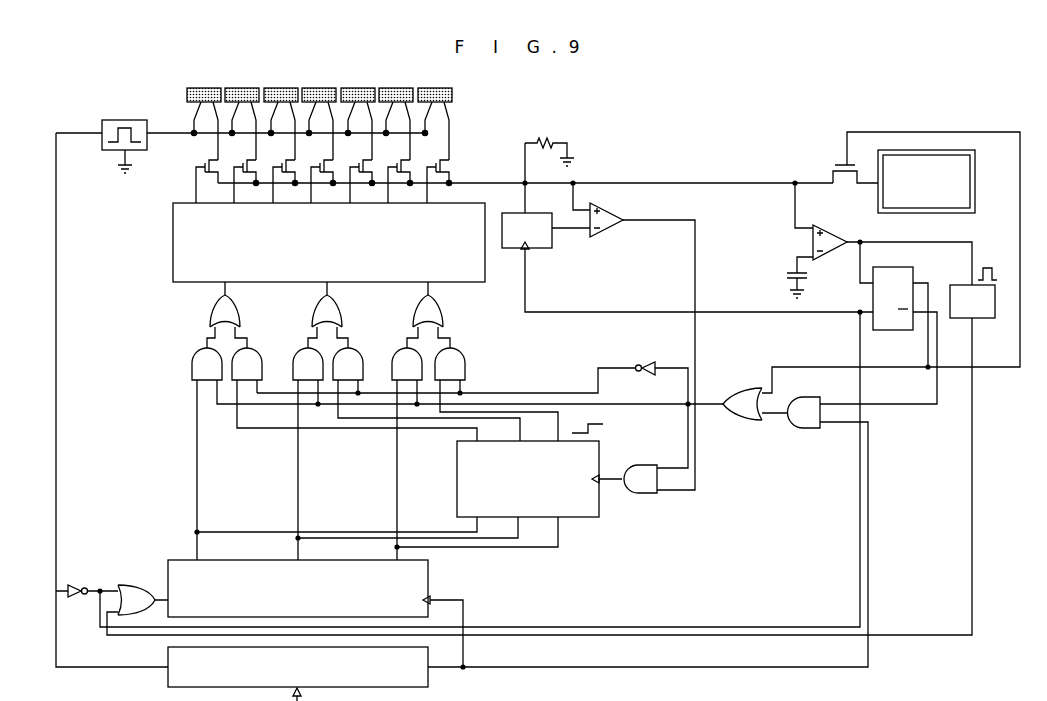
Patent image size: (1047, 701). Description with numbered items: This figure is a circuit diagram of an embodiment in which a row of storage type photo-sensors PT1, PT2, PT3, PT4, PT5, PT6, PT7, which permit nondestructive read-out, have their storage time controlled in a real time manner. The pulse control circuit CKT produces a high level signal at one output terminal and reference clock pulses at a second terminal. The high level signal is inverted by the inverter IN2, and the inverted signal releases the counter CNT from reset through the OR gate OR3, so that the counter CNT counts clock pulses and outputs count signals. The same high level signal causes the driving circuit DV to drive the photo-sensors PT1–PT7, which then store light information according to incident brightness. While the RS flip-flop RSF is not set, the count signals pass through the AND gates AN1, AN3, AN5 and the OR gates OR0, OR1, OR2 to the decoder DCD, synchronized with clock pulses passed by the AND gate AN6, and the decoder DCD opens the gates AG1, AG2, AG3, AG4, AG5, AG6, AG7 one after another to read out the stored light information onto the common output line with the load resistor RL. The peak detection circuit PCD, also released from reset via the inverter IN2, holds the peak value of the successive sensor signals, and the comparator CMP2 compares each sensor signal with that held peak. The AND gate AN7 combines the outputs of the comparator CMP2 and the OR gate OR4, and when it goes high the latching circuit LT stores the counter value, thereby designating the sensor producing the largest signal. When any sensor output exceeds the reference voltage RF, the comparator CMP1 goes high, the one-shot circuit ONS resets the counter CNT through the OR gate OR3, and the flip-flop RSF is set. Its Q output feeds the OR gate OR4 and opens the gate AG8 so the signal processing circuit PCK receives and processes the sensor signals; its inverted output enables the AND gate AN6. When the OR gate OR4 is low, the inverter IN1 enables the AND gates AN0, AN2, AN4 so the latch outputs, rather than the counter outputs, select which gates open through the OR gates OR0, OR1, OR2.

The driving circuit DV is at (120, 119).
The photo-sensor PT1 is at (419, 87).
The photo-sensor PT2 is at (380, 87).
The photo-sensor PT3 is at (342, 87).
The photo-sensor PT4 is at (303, 87).
The photo-sensor PT5 is at (265, 87).
The photo-sensor PT6 is at (226, 87).
The photo-sensor PT7 is at (188, 87).
The gate AG1 is at (440, 159).
The gate AG2 is at (401, 159).
The gate AG3 is at (363, 159).
The gate AG4 is at (324, 159).
The gate AG5 is at (286, 159).
The gate AG6 is at (247, 159).
The gate AG7 is at (209, 159).
The gate AG8 is at (833, 164).
The decoder DCD is at (329, 242).
The load resistor RL is at (538, 141).
The peak detection circuit PCD is at (527, 231).
The comparator CMP1 is at (832, 226).
The comparator CMP2 is at (622, 219).
The reference voltage RF is at (788, 279).
The signal processing circuit PCK is at (926, 181).
The RS flip-flop RSF is at (908, 268).
The one-shot circuit ONS is at (973, 293).
The OR gate OR0 is at (445, 303).
The OR gate OR1 is at (344, 303).
The OR gate OR2 is at (242, 303).
The OR gate OR3 is at (132, 583).
The OR gate OR4 is at (742, 421).
The AND gate AN0 is at (456, 350).
The AND gate AN1 is at (402, 350).
The AND gate AN2 is at (355, 350).
The AND gate AN3 is at (302, 350).
The AND gate AN4 is at (256, 350).
The AND gate AN5 is at (196, 350).
The AND gate AN6 is at (805, 428).
The AND gate AN7 is at (640, 494).
The inverter IN1 is at (640, 361).
The inverter IN2 is at (78, 583).
The latching circuit LT is at (530, 470).
The counter CNT is at (299, 588).
The pulse control circuit CKT is at (298, 674).